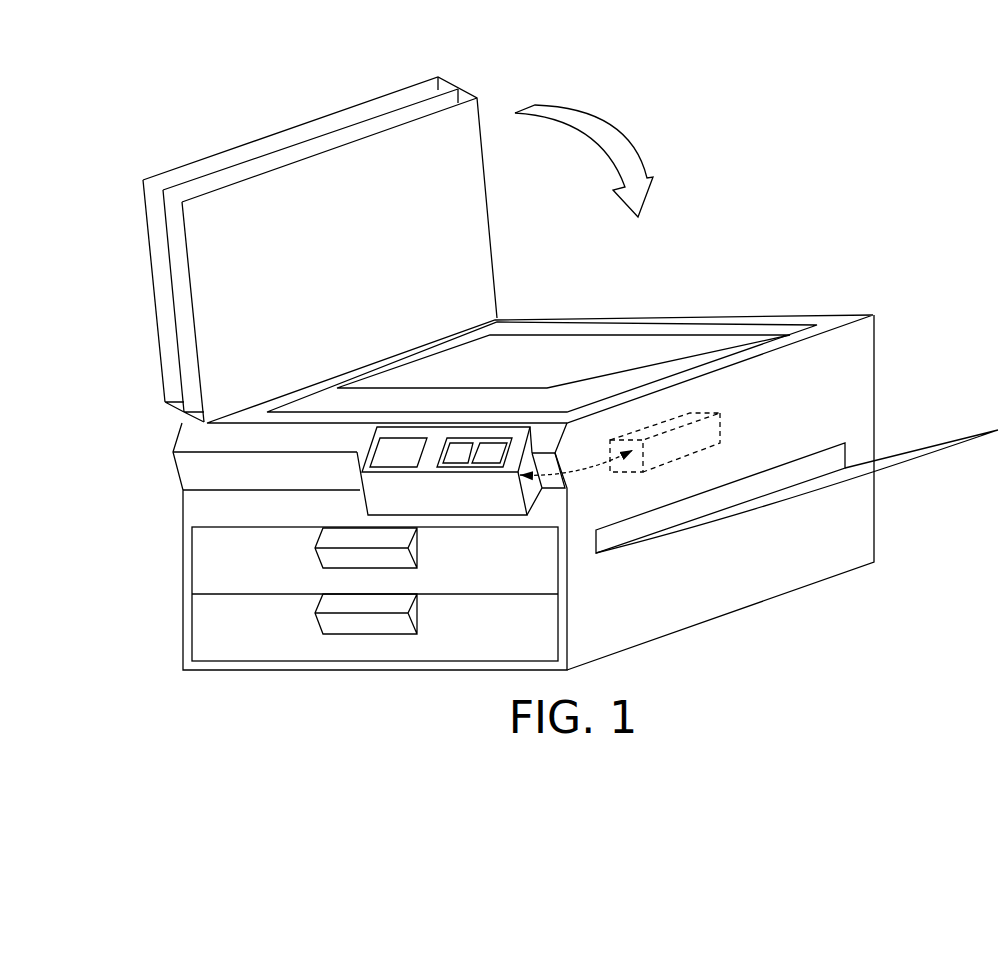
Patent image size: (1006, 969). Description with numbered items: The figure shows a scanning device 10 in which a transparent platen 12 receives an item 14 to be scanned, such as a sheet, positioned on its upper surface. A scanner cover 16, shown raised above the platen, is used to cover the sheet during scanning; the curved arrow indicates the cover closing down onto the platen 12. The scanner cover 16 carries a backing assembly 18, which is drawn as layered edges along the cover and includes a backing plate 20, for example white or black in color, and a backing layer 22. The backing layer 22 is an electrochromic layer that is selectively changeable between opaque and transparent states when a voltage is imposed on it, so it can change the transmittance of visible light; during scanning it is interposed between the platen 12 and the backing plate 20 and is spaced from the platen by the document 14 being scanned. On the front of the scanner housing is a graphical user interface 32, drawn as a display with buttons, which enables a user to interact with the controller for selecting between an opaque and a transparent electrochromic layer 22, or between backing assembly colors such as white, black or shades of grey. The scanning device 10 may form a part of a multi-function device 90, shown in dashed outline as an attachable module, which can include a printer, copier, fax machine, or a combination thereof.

The scanning device 10 is at (212, 112).
The transparent platen 12 is at (708, 355).
The item to be scanned 14 is at (463, 367).
The scanner cover 16 is at (167, 157).
The backing assembly 18 is at (197, 357).
The backing plate 20 is at (163, 220).
The backing layer 22 is at (188, 260).
The graphical user interface 32 is at (388, 457).
The multi-function device 90 is at (697, 463).